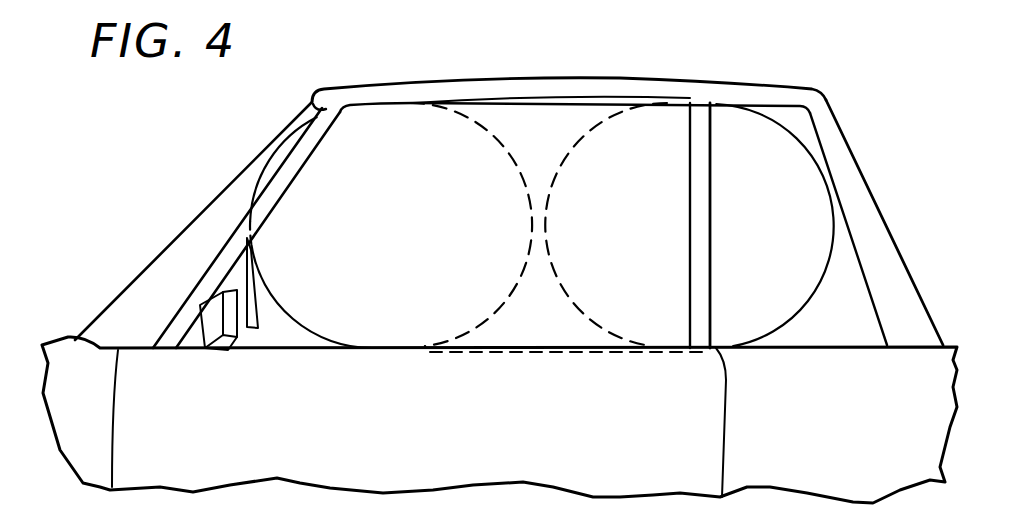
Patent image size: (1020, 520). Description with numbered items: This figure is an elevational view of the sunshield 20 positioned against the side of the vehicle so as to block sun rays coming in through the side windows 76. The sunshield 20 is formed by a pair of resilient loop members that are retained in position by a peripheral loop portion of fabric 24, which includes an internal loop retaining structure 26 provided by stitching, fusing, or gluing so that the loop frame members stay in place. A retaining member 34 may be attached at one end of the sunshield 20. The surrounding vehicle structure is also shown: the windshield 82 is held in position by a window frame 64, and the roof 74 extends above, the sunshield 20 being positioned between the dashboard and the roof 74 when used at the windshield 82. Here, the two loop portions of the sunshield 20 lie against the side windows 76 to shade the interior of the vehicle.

The sunshield 20 is at (560, 152).
The peripheral loop portion of fabric 24 is at (297, 323).
The internal loop retaining structure 26 is at (480, 127).
The retaining member 34 is at (250, 335).
The window frame 64 is at (293, 173).
The roof 74 is at (380, 93).
The side windows 76 is at (613, 118).
The windshield 82 is at (153, 260).